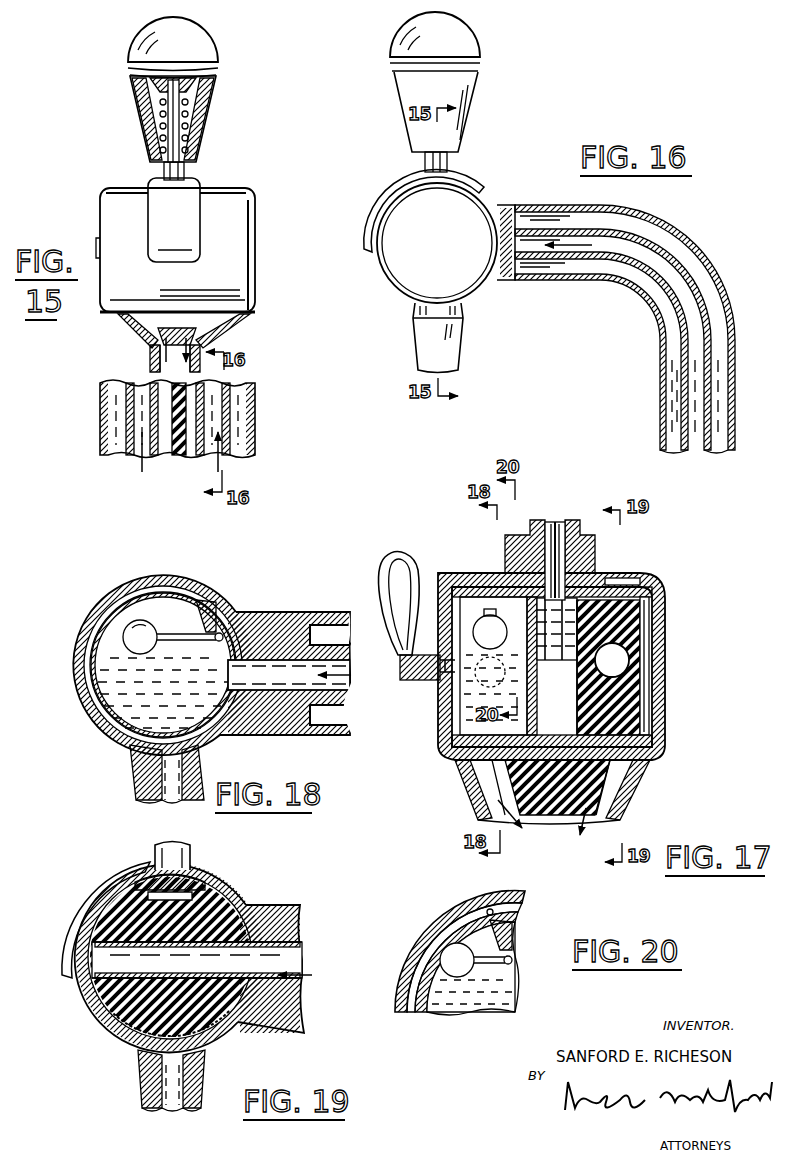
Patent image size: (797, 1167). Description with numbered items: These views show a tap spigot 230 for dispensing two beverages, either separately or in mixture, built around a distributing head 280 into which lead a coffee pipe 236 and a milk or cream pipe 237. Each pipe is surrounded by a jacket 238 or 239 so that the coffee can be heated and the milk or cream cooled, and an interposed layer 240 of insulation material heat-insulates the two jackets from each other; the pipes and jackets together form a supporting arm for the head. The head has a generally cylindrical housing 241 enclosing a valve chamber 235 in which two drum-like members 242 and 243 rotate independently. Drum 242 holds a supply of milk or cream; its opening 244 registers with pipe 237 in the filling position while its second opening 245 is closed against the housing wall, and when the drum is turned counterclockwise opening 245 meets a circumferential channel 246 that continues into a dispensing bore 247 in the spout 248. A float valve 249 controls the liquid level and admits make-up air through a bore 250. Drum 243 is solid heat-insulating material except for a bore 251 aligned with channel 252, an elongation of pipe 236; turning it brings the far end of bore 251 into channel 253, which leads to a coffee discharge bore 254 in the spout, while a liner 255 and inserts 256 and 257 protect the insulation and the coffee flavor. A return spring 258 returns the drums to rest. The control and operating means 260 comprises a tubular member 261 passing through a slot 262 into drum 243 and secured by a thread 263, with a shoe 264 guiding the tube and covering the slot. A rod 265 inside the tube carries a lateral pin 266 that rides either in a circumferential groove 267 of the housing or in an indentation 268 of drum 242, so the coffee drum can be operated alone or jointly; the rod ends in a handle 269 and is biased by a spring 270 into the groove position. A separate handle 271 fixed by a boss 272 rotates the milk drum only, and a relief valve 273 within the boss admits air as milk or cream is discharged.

In FIG. 15, the faucet assembly 230 is at (83, 206).
In FIG. 16, the faucet assembly 230 is at (486, 173).
In FIG. 16, the valve chamber 235 is at (410, 268).
In FIG. 15, the coffee pipe 236 is at (218, 396).
In FIG. 16, the coffee pipe 236 is at (660, 262).
In FIG. 19, the coffee pipe 236 is at (298, 964).
In FIG. 15, the milk or cream pipe 237 is at (140, 396).
In FIG. 18, the milk or cream pipe 237 is at (278, 666).
In FIG. 15, the jacket 238 is at (240, 428).
In FIG. 16, the jacket 238 is at (712, 294).
In FIG. 15, the jacket 239 is at (116, 440).
In FIG. 18, the jacket 239 is at (322, 628).
In FIG. 15, the layer of insulation material 240 is at (180, 461).
In FIG. 15, the housing 241 is at (238, 240).
In FIG. 16, the housing 241 is at (470, 288).
In FIG. 18, the housing 241 is at (170, 580).
In FIG. 17, the housing 241 is at (660, 712).
In FIG. 19, the housing 241 is at (103, 1047).
In FIG. 20, the housing 241 is at (510, 908).
In FIG. 18, the drum 242 is at (100, 712).
In FIG. 17, the drum 242 is at (442, 738).
In FIG. 20, the drum 242 is at (402, 992).
In FIG. 17, the drum 243 is at (647, 752).
In FIG. 19, the drum 243 is at (117, 1017).
In FIG. 18, the opening 244 is at (240, 674).
In FIG. 17, the opening 244 is at (442, 705).
In FIG. 18, the opening 245 is at (100, 652).
In FIG. 18, the circumferential channel 246 is at (128, 748).
In FIG. 15, the dispensing bore 247 is at (150, 340).
In FIG. 18, the dispensing bore 247 is at (138, 790).
In FIG. 17, the dispensing bore 247 is at (493, 770).
In FIG. 15, the spout 248 is at (150, 366).
In FIG. 16, the spout 248 is at (452, 353).
In FIG. 18, the spout 248 is at (195, 780).
In FIG. 17, the spout 248 is at (627, 800).
In FIG. 19, the spout 248 is at (143, 1108).
In FIG. 18, the float valve 249 is at (187, 590).
In FIG. 17, the float valve 249 is at (478, 584).
In FIG. 20, the float valve 249 is at (517, 977).
In FIG. 18, the bore 250 is at (208, 602).
In FIG. 17, the bore 251 is at (624, 665).
In FIG. 19, the bore 251 is at (100, 979).
In FIG. 17, the channel 252 is at (615, 584).
In FIG. 19, the channel 252 is at (268, 913).
In FIG. 19, the channel 253 is at (133, 1048).
In FIG. 15, the coffee discharge bore 254 is at (192, 342).
In FIG. 17, the coffee discharge bore 254 is at (590, 803).
In FIG. 19, the coffee discharge bore 254 is at (180, 1100).
In FIG. 17, the liner 255 is at (634, 693).
In FIG. 19, the liner 255 is at (178, 958).
In FIG. 19, the insert 256 is at (203, 872).
In FIG. 19, the insert 257 is at (200, 1057).
In FIG. 17, the return spring 258 is at (660, 636).
In FIG. 15, the control and operating means 260 is at (224, 148).
In FIG. 16, the control and operating means 260 is at (416, 162).
In FIG. 17, the control and operating means 260 is at (587, 492).
In FIG. 15, the tubular member 261 is at (160, 160).
In FIG. 17, the tubular member 261 is at (567, 530).
In FIG. 19, the tubular member 261 is at (155, 860).
In FIG. 17, the slot 262 is at (584, 562).
In FIG. 17, the thread 263 is at (568, 660).
In FIG. 15, the shoe 264 is at (190, 200).
In FIG. 16, the shoe 264 is at (380, 217).
In FIG. 17, the shoe 264 is at (513, 556).
In FIG. 19, the shoe 264 is at (85, 922).
In FIG. 15, the rod 265 is at (200, 100).
In FIG. 17, the rod 265 is at (552, 525).
In FIG. 17, the pin 266 is at (526, 556).
In FIG. 20, the pin 266 is at (478, 901).
In FIG. 20, the circumferential groove 267 is at (417, 941).
In FIG. 17, the indentation 268 is at (486, 613).
In FIG. 20, the indentation 268 is at (517, 944).
In FIG. 15, the handle 269 is at (205, 42).
In FIG. 16, the handle 269 is at (470, 44).
In FIG. 15, the spring 270 is at (148, 98).
In FIG. 17, the handle 271 is at (395, 553).
In FIG. 17, the boss 272 is at (406, 680).
In FIG. 17, the relief valve 273 is at (430, 662).
In FIG. 18, the distributing head 280 is at (96, 613).
In FIG. 17, the distributing head 280 is at (668, 569).
In FIG. 19, the distributing head 280 is at (262, 895).
In FIG. 20, the distributing head 280 is at (448, 1018).